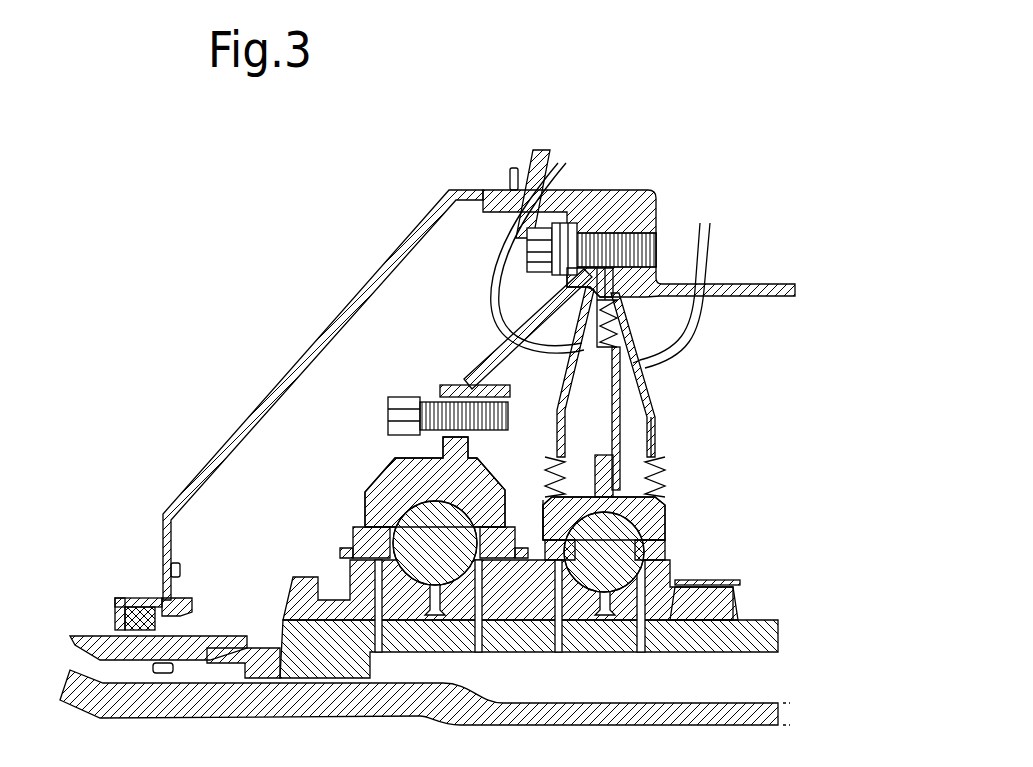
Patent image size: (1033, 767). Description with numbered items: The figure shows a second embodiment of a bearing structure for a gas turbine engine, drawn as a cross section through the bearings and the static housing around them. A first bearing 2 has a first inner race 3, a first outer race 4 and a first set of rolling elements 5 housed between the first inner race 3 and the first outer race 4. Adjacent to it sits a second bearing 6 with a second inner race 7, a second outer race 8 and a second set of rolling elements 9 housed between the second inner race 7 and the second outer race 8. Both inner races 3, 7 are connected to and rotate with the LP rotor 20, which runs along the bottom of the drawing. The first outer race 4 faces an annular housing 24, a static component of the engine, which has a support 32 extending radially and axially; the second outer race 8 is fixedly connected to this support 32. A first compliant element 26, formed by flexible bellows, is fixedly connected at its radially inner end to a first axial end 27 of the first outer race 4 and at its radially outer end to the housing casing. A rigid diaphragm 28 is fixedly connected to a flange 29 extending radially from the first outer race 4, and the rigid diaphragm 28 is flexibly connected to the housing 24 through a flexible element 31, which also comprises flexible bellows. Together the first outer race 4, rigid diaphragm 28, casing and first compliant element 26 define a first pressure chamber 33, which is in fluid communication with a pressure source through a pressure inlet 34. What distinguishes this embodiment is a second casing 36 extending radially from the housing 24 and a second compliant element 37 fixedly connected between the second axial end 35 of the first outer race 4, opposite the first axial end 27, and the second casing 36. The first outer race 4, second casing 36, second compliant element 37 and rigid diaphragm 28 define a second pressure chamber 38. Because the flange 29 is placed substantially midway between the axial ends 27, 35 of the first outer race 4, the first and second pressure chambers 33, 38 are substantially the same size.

The first bearing 2 is at (715, 470).
The first inner race 3 is at (660, 595).
The first outer race 4 is at (660, 507).
The first set of rolling elements 5 is at (598, 600).
The second bearing 6 is at (350, 525).
The second inner race 7 is at (393, 590).
The second outer race 8 is at (392, 490).
The second set of rolling elements 9 is at (413, 600).
The LP rotor 20 is at (445, 635).
The annular housing 24 is at (641, 213).
The first compliant element 26 is at (667, 468).
The first axial end 27 is at (667, 522).
The rigid diaphragm 28 is at (605, 418).
The flange 29 is at (595, 487).
The flexible element 31 is at (577, 308).
The support 32 is at (490, 370).
The first pressure chamber 33 is at (632, 435).
The pressure inlet 34 is at (703, 262).
The second axial end 35 is at (633, 362).
The second casing 36 is at (577, 337).
The second compliant element 37 is at (548, 468).
The second pressure chamber 38 is at (575, 401).